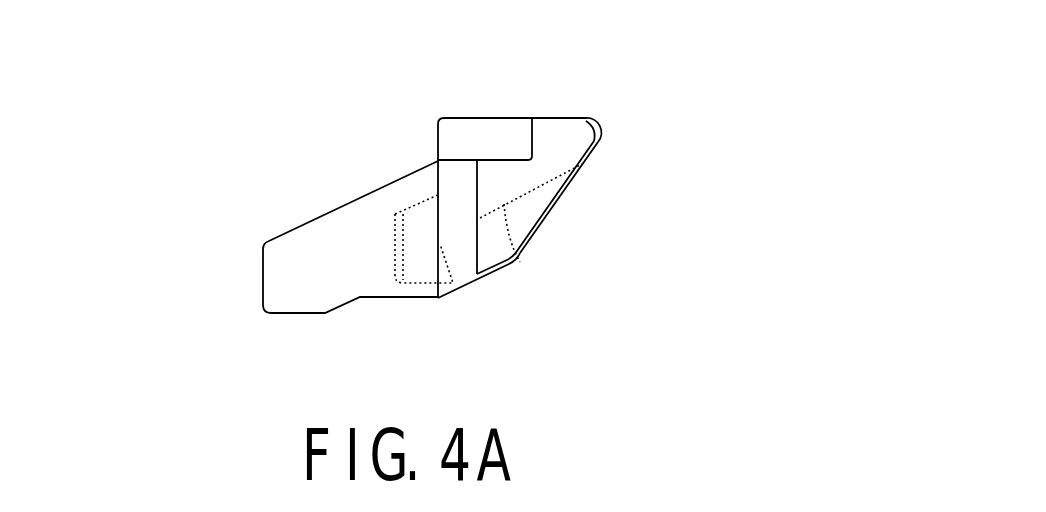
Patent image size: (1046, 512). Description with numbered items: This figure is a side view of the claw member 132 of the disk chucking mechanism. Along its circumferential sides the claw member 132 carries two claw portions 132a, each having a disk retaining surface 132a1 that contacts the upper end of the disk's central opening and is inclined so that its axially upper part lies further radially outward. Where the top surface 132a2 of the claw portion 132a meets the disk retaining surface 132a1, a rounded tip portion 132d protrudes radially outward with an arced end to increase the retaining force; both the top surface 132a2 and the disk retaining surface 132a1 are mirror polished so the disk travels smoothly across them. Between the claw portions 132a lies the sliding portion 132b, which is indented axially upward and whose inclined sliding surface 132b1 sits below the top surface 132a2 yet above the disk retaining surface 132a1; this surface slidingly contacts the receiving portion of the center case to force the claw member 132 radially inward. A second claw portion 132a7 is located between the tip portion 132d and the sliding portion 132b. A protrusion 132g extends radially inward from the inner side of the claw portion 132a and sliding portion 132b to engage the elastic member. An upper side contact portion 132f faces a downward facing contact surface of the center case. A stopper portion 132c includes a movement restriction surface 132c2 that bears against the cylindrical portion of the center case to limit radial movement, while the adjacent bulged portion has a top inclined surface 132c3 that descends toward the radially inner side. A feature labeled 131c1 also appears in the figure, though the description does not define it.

The claw member 132 is at (272, 66).
The engaging portion 131c1 is at (262, 273).
The claw portion 132a is at (577, 182).
The disk retaining surface 132a1 is at (555, 207).
The top surface 132a2 is at (559, 118).
The second claw portion 132a7 is at (601, 151).
The sliding portion 132b is at (533, 198).
The sliding surface 132b1 is at (520, 262).
The stopper portion 132c is at (318, 215).
The movement restriction surface 132c2 is at (477, 240).
The inclined surface 132c3 is at (370, 191).
The tip portion 132d is at (601, 138).
The upper side contact portion 132f is at (502, 160).
The protrusion 132g is at (398, 249).